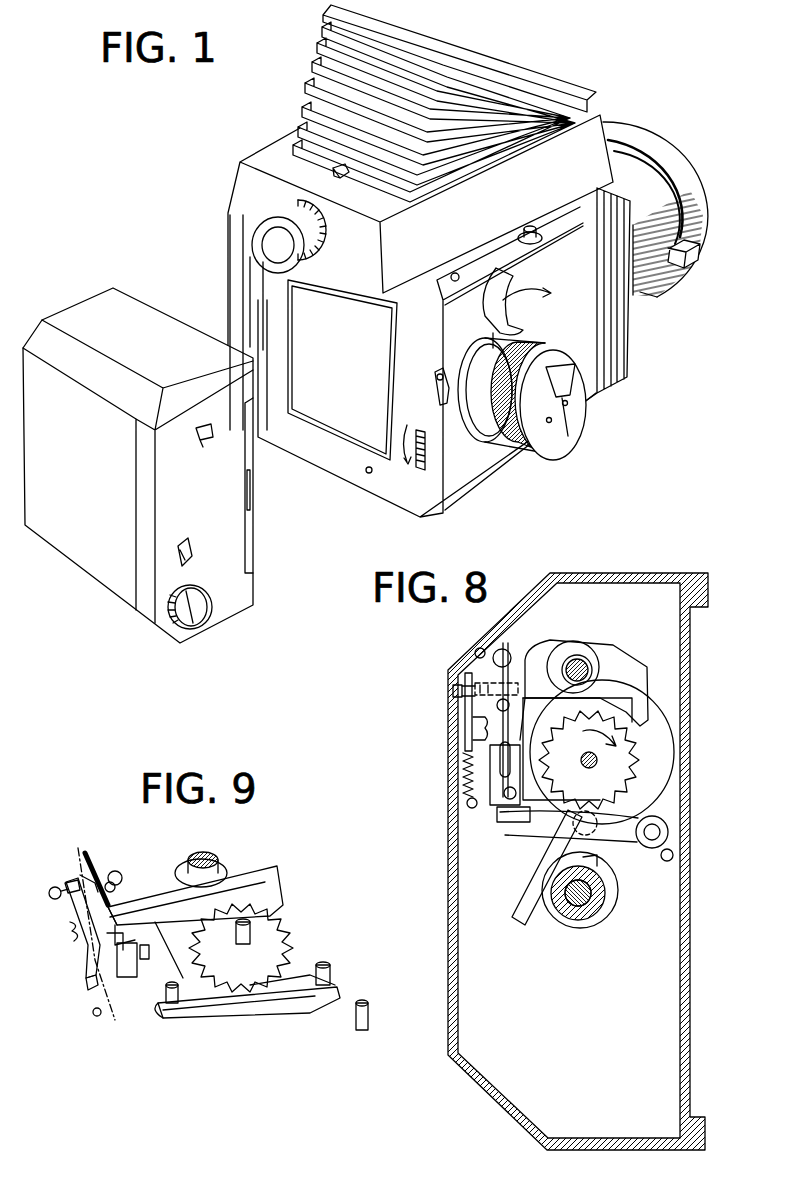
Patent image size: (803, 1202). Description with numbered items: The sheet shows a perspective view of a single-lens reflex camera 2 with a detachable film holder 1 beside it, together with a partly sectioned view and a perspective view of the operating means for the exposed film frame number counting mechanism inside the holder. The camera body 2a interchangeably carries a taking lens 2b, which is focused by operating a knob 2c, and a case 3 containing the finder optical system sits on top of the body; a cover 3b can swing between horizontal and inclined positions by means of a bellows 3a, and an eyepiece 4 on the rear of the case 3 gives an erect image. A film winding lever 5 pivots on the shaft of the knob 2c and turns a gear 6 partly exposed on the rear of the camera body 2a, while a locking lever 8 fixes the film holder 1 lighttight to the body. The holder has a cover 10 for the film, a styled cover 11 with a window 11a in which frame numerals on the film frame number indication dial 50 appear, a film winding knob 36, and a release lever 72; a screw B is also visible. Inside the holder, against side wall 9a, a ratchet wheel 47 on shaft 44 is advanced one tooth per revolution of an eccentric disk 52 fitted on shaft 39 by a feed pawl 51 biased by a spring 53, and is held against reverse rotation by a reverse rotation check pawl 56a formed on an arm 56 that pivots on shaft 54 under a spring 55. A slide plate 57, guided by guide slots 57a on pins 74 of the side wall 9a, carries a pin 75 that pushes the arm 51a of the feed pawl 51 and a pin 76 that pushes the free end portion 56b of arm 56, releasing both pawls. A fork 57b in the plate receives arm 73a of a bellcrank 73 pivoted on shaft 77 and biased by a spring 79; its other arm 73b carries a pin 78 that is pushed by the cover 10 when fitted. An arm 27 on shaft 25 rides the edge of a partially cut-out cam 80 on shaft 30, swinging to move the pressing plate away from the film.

In FIG. 1, the film holder 1 is at (149, 300).
In FIG. 1, the camera 2 is at (618, 405).
In FIG. 1, the camera body 2a is at (480, 470).
In FIG. 1, the taking lens 2b is at (690, 249).
In FIG. 1, the knob 2c is at (576, 426).
In FIG. 1, the case 3 is at (271, 151).
In FIG. 1, the bellows 3a is at (308, 97).
In FIG. 1, the cover 3b is at (426, 36).
In FIG. 1, the eyepiece 4 is at (253, 248).
In FIG. 1, the film winding lever 5 is at (489, 313).
In FIG. 1, the gear 6 is at (415, 463).
In FIG. 1, the locking lever 8 is at (447, 402).
In FIG. 8, the side wall 9a is at (641, 580).
In FIG. 1, the cover 10 is at (70, 553).
In FIG. 1, the cover 11 is at (240, 522).
In FIG. 1, the window 11a is at (205, 440).
In FIG. 1, the film winding knob 36 is at (198, 620).
In FIG. 1, the release lever 72 is at (188, 546).
In FIG. 1, the screw B is at (522, 229).
In FIG. 8, the shaft 25 is at (596, 836).
In FIG. 8, the arm 27 is at (513, 912).
In FIG. 8, the shaft 30 is at (558, 918).
In FIG. 8, the shaft 39 is at (590, 663).
In FIG. 9, the shaft 39 is at (215, 857).
In FIG. 8, the shaft 44 is at (632, 780).
In FIG. 8, the ratchet wheel 47 is at (640, 750).
In FIG. 9, the ratchet wheel 47 is at (290, 930).
In FIG. 8, the film frame number indication dial 50 is at (675, 752).
In FIG. 8, the feed pawl 51 is at (638, 668).
In FIG. 9, the feed pawl 51 is at (255, 864).
In FIG. 8, the arm 51a is at (524, 710).
In FIG. 9, the arm 51a is at (150, 880).
In FIG. 8, the eccentric disk 52 is at (583, 650).
In FIG. 9, the eccentric disk 52 is at (203, 852).
In FIG. 8, the spring 53 is at (476, 653).
In FIG. 9, the spring 53 is at (80, 875).
In FIG. 8, the shaft 54 is at (668, 830).
In FIG. 9, the shaft 54 is at (323, 972).
In FIG. 8, the spring 55 is at (673, 856).
In FIG. 9, the spring 55 is at (355, 1015).
In FIG. 8, the arm 56 is at (652, 848).
In FIG. 9, the arm 56 is at (230, 1012).
In FIG. 8, the reverse rotation check pawl 56a is at (587, 806).
In FIG. 9, the reverse rotation check pawl 56a is at (265, 1008).
In FIG. 8, the free end portion 56b is at (508, 828).
In FIG. 9, the free end portion 56b is at (168, 1018).
In FIG. 8, the slide plate 57 is at (498, 800).
In FIG. 9, the slide plate 57 is at (123, 948).
In FIG. 8, the guide slots 57a is at (511, 667).
In FIG. 9, the guide slots 57a is at (122, 1028).
In FIG. 8, the fork 57b is at (470, 727).
In FIG. 9, the fork 57b is at (128, 975).
In FIG. 8, the bellcrank 73 is at (463, 780).
In FIG. 9, the bellcrank 73 is at (68, 920).
In FIG. 9, the arm 73a is at (88, 978).
In FIG. 8, the arm 73b is at (463, 700).
In FIG. 9, the arm 73b is at (65, 885).
In FIG. 8, the pins 74 is at (583, 755).
In FIG. 9, the pins 74 is at (232, 932).
In FIG. 8, the pin 75 is at (495, 650).
In FIG. 9, the pin 75 is at (110, 870).
In FIG. 8, the pin 76 is at (506, 826).
In FIG. 9, the pin 76 is at (178, 1003).
In FIG. 8, the shaft 77 is at (463, 765).
In FIG. 9, the shaft 77 is at (75, 945).
In FIG. 8, the pin 78 is at (453, 688).
In FIG. 9, the pin 78 is at (52, 898).
In FIG. 8, the spring 79 is at (467, 808).
In FIG. 9, the spring 79 is at (95, 1012).
In FIG. 8, the cam 80 is at (610, 905).